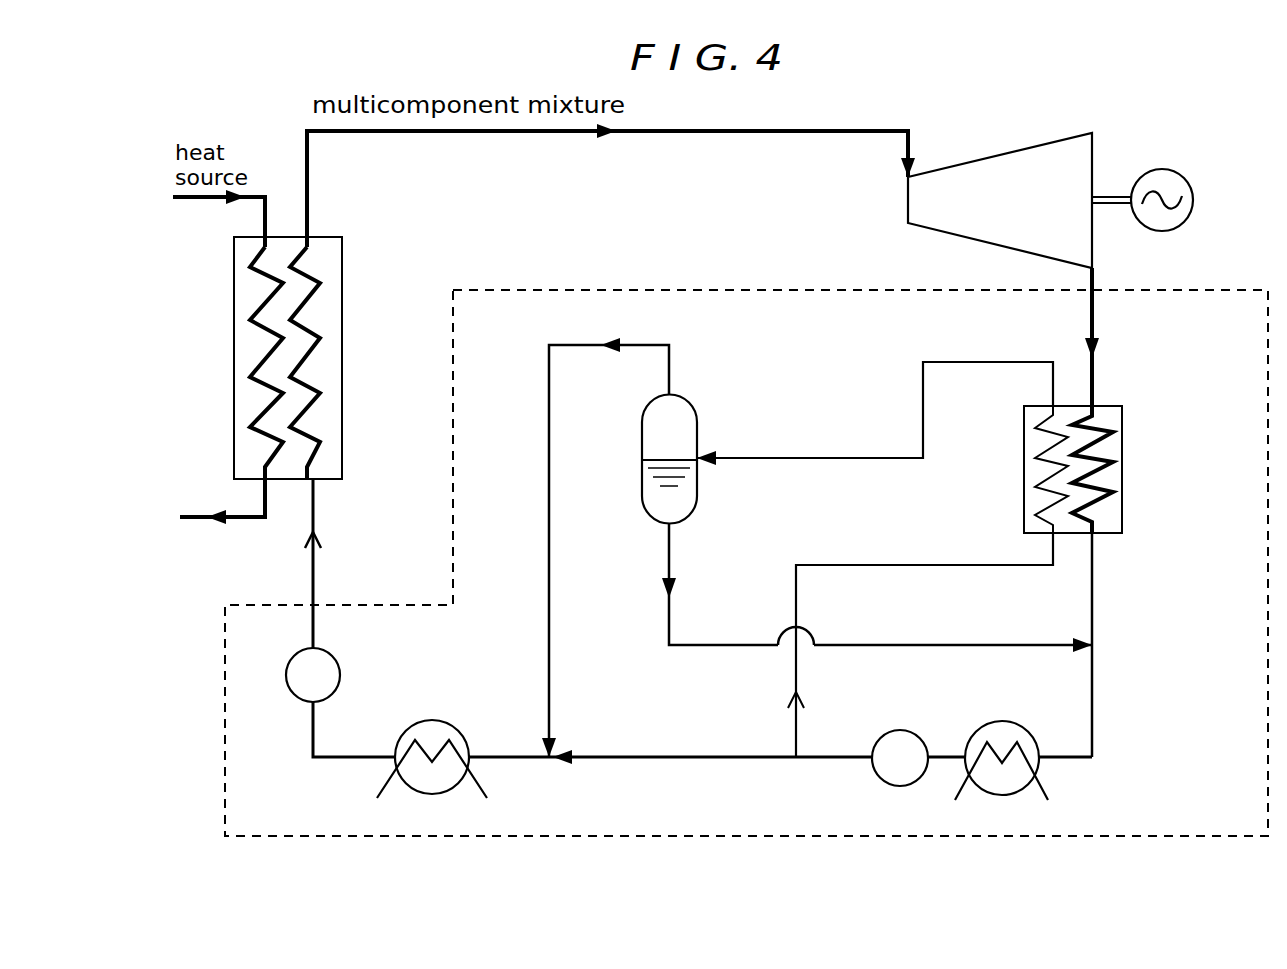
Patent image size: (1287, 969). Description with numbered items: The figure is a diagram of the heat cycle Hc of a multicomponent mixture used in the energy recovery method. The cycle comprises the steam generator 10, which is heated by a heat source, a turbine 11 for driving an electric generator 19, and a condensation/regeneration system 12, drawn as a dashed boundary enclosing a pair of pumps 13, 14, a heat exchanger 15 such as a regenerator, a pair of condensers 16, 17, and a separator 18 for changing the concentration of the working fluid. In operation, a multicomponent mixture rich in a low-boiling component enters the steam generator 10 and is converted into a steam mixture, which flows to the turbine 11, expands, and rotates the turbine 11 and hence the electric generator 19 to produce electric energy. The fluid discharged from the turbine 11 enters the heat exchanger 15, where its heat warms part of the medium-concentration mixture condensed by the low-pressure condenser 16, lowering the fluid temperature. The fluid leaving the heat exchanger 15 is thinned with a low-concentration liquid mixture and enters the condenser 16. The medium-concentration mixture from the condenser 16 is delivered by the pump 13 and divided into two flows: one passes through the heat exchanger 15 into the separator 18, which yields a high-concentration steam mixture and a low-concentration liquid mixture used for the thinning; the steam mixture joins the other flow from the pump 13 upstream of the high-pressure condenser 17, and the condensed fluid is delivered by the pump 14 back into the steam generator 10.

The steam generator 10 is at (342, 267).
The turbine 11 is at (1000, 152).
The condensation/regeneration system 12 is at (525, 838).
The pump 13 is at (904, 731).
The pump 14 is at (340, 667).
The heat exchanger 15 is at (1122, 460).
The condenser 16 is at (1017, 726).
The condenser 17 is at (450, 722).
The separator 18 is at (697, 422).
The electric generator 19 is at (1183, 178).
The heat cycle Hc is at (818, 124).